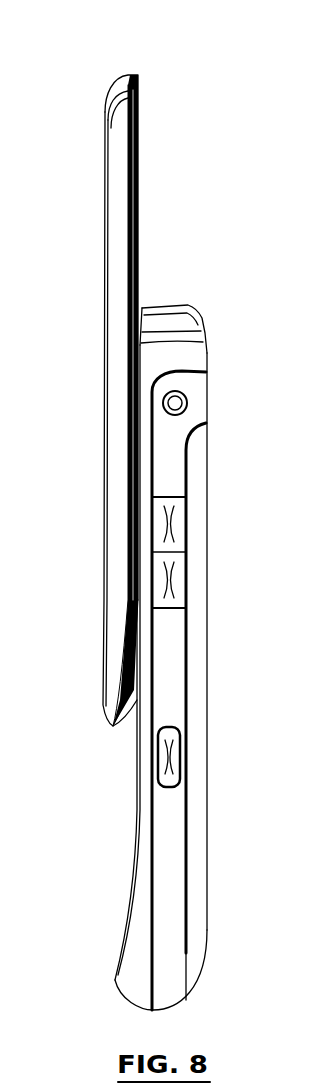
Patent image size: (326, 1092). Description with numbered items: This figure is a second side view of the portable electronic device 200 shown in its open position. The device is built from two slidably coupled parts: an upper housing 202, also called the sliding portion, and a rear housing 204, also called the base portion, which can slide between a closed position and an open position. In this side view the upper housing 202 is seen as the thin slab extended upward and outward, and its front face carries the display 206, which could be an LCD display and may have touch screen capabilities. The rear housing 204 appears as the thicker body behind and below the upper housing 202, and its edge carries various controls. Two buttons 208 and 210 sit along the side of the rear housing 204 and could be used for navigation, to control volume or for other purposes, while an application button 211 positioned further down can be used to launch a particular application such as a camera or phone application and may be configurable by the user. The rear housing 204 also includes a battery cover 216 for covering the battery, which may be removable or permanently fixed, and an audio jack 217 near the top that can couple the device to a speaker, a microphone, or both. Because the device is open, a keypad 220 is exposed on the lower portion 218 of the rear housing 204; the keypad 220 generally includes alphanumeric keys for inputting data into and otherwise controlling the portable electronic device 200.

The portable electronic device 200 is at (153, 46).
The upper housing 202 is at (118, 154).
The rear housing 204 is at (167, 865).
The display 206 is at (106, 428).
The button 208 is at (180, 523).
The button 210 is at (180, 581).
The application button 211 is at (181, 760).
The battery cover 216 is at (193, 690).
The audio jack 217 is at (170, 403).
The lower portion 218 is at (183, 932).
The keypad 220 is at (111, 885).